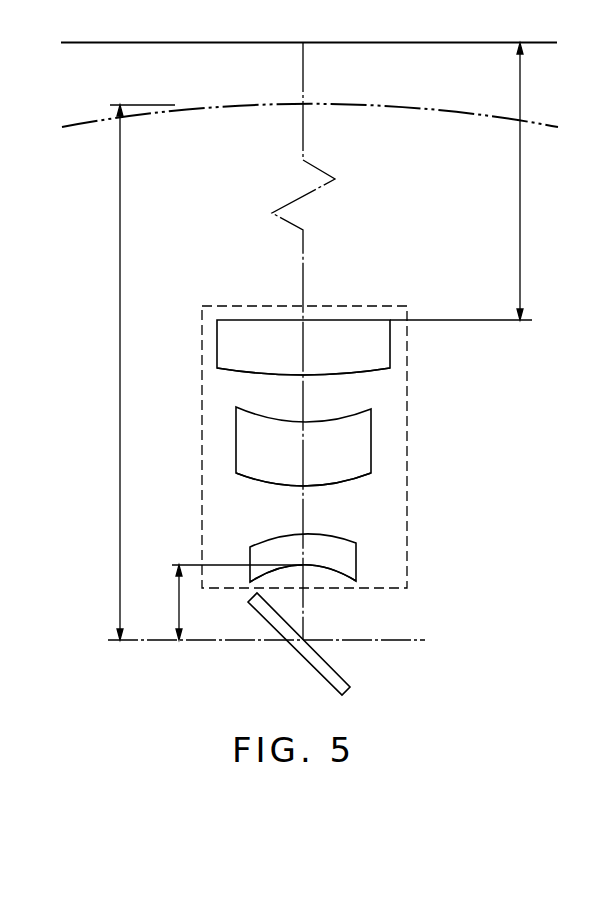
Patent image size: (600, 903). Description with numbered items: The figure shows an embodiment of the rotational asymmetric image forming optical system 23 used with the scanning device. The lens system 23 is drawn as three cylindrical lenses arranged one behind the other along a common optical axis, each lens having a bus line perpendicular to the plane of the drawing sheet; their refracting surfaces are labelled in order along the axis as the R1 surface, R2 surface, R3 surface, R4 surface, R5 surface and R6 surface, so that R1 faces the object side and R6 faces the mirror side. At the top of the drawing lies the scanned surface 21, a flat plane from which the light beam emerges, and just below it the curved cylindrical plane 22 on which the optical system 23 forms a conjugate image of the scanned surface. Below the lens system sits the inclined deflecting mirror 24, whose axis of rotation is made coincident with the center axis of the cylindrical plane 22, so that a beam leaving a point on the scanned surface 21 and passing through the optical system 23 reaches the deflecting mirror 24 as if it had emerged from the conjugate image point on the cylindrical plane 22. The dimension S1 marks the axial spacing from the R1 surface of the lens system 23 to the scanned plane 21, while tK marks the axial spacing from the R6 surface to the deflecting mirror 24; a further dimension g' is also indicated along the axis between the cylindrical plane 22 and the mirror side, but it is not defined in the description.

The scanned surface 21 is at (390, 42).
The cylindrical plane 22 is at (393, 108).
The rotational asymmetric image forming optical system 23 is at (407, 455).
The deflecting mirror 24 is at (310, 661).
The R1 surface R1 is at (249, 322).
The R2 surface R2 is at (244, 373).
The R3 surface R3 is at (251, 411).
The R4 surface R4 is at (250, 479).
The R5 surface R5 is at (262, 541).
The R6 surface R6 is at (325, 572).
The axial spacing from the R1 surface to the scanned plane S1 is at (469, 181).
The image distance g' is at (142, 372).
The axial spacing from the R6 surface to the deflecting mirror tK is at (237, 602).